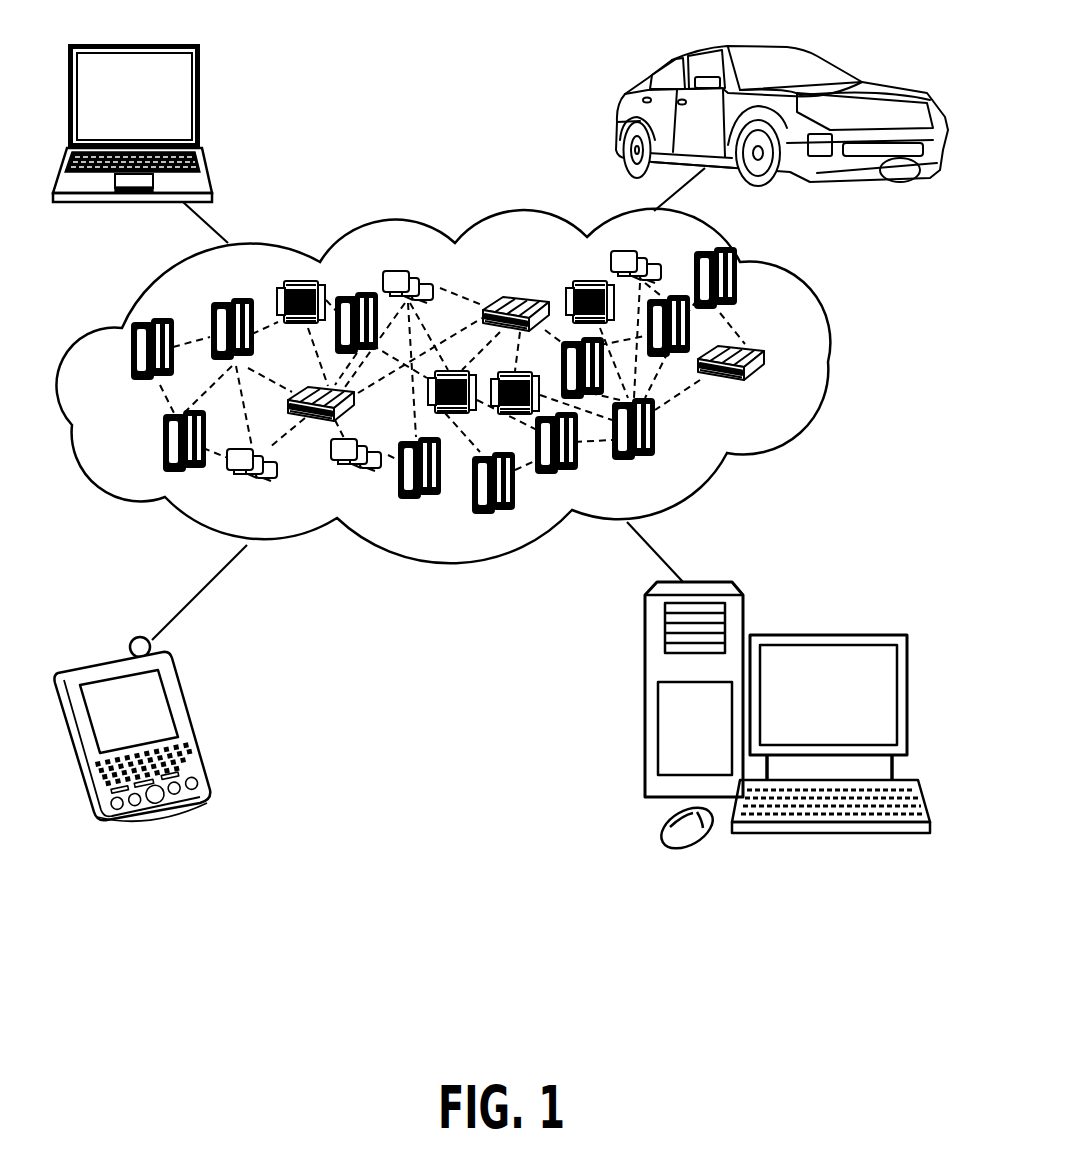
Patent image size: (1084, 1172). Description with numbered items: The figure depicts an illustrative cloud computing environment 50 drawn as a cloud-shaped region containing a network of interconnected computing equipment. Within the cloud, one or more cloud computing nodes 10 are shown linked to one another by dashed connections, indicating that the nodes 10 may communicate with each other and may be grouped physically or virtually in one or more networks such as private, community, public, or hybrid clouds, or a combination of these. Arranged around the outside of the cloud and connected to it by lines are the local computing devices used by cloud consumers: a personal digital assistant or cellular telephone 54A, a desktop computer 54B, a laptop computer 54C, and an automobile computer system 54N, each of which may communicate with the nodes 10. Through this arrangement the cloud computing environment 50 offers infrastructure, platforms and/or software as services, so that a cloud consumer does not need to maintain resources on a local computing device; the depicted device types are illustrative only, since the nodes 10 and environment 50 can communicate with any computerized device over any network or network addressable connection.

The cloud computing node 10 is at (777, 393).
The cloud computing environment 50 is at (828, 362).
The personal digital assistant or cellular telephone 54A is at (188, 723).
The desktop computer 54B is at (830, 633).
The laptop computer 54C is at (201, 103).
The automobile computer system 54N is at (617, 120).